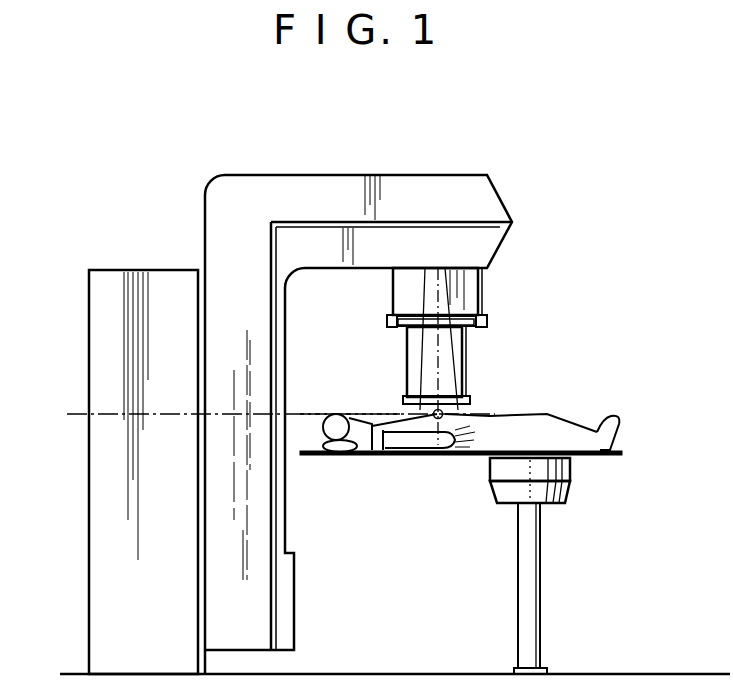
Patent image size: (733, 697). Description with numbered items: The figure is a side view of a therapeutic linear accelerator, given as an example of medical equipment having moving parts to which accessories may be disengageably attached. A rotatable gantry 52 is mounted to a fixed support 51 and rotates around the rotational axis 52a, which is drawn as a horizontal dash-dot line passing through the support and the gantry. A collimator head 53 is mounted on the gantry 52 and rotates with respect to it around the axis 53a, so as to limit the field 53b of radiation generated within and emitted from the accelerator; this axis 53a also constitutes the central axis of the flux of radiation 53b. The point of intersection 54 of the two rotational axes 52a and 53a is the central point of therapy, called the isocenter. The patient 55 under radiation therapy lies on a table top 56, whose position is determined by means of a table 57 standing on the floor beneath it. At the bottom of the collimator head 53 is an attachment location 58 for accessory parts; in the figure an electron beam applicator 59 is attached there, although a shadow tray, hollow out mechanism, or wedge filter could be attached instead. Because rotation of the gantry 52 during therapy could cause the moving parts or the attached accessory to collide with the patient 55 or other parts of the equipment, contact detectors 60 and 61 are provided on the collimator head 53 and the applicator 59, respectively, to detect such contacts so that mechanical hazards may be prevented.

The fixed support 51 is at (89, 373).
The rotatable gantry 52 is at (446, 175).
The rotational axis 52a is at (323, 412).
The collimator head 53 is at (470, 273).
The axis 53a is at (435, 350).
The field of radiation 53b is at (442, 285).
The point of intersection 54 is at (435, 419).
The patient 55 is at (365, 452).
The table top 56 is at (622, 453).
The table 57 is at (572, 468).
The attachment location 58 is at (482, 300).
The electron beam applicator 59 is at (467, 357).
The contact detector 60 is at (487, 324).
The contact detector 61 is at (475, 398).